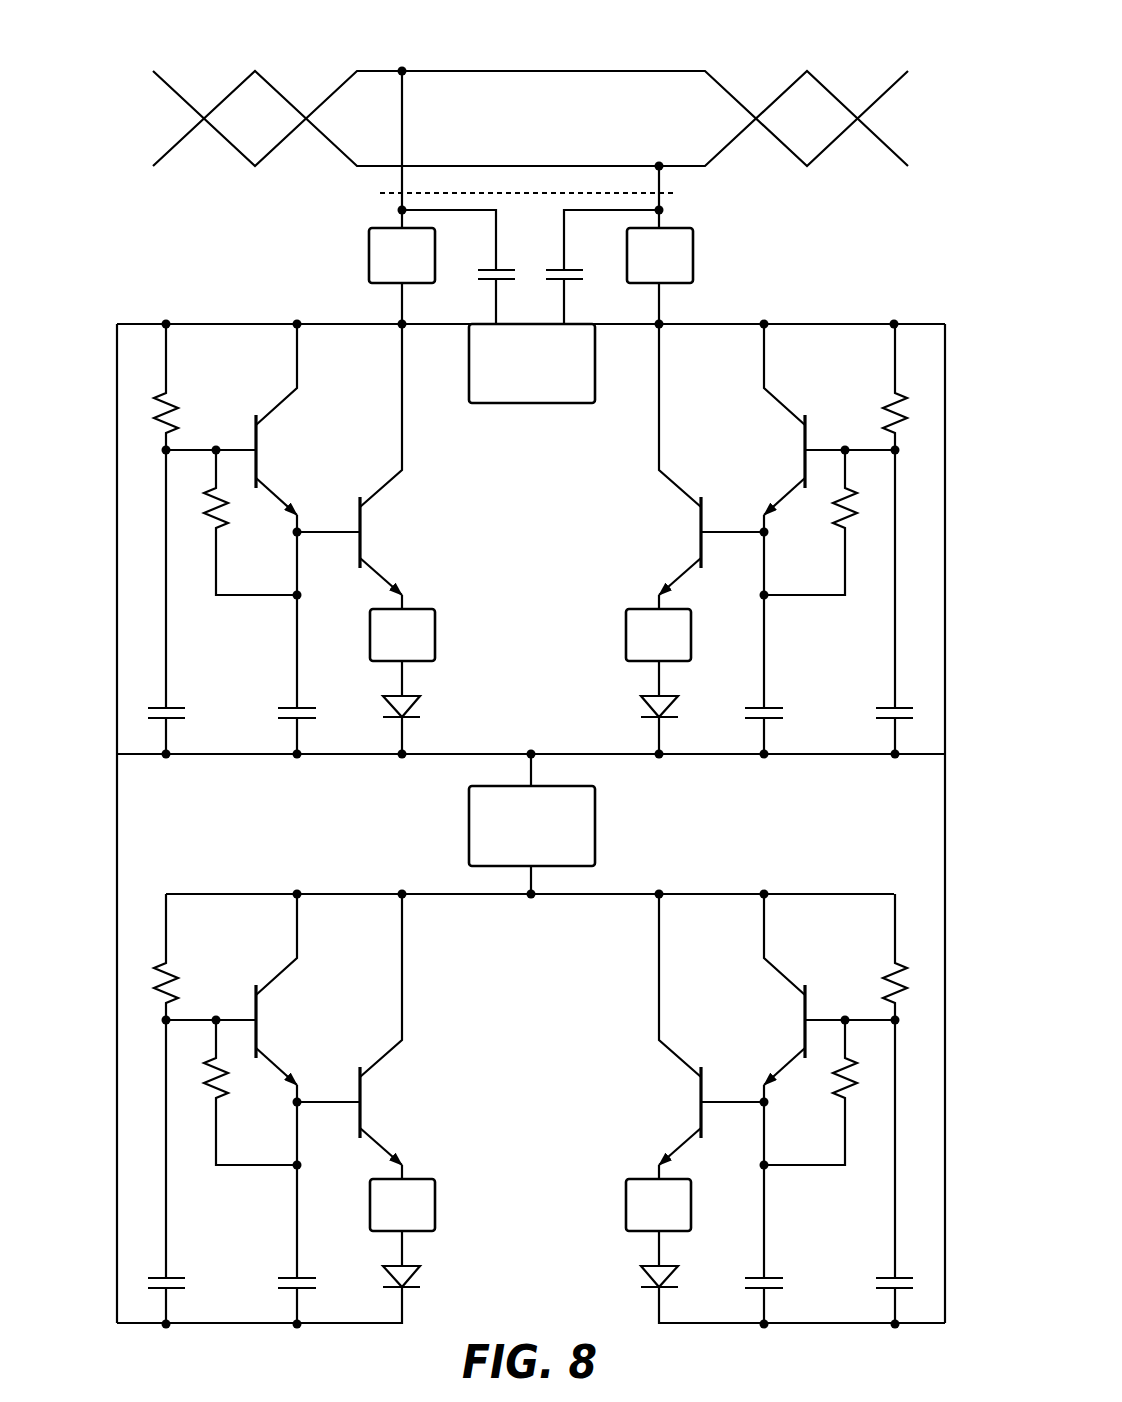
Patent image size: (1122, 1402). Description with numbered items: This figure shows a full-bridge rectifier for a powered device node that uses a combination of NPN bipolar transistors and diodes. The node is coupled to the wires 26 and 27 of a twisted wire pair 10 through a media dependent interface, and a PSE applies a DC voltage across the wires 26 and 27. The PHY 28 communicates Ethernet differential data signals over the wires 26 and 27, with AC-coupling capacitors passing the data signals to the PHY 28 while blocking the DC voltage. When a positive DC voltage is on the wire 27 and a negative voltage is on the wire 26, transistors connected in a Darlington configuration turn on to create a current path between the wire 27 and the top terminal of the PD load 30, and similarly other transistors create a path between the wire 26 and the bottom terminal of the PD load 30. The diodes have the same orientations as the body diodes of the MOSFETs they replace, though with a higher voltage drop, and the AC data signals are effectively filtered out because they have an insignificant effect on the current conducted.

The twisted wire pair 10 is at (357, 43).
The wire 26 is at (163, 157).
The wire 27 is at (163, 80).
The PHY 28 is at (511, 404).
The PD load 30 is at (469, 822).